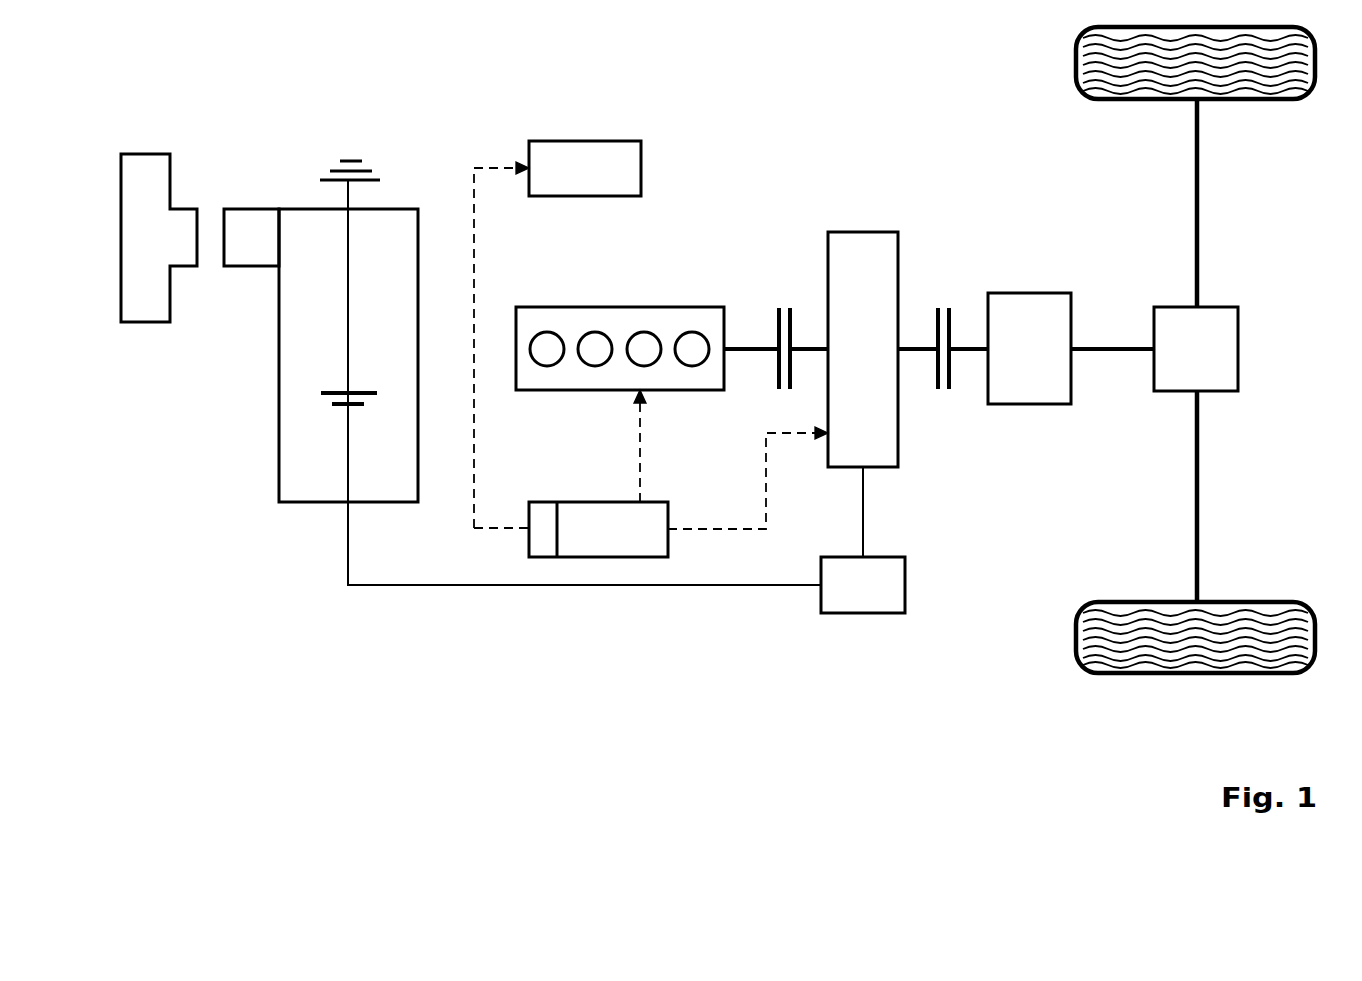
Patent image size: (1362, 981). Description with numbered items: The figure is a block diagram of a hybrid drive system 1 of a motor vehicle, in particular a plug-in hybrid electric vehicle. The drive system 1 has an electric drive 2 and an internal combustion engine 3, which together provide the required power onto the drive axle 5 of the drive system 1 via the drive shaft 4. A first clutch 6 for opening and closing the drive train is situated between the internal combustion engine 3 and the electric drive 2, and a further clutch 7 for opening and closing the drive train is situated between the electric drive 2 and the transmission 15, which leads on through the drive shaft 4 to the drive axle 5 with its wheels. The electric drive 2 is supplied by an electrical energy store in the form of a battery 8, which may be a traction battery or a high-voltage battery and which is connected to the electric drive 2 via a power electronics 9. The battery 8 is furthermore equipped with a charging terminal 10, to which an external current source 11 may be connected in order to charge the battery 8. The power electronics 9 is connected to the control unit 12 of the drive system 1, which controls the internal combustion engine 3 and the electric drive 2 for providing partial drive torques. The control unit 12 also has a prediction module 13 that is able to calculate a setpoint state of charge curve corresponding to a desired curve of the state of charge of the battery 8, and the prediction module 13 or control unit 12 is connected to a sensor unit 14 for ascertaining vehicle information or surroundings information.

The hybrid drive system 1 is at (498, 609).
The electric drive 2 is at (864, 232).
The internal combustion engine 3 is at (657, 307).
The drive shaft 4 is at (1113, 347).
The drive axle 5 is at (1199, 198).
The first clutch 6 is at (786, 305).
The clutch 7 is at (944, 305).
The battery 8 is at (309, 502).
The power electronics 9 is at (905, 585).
The charging terminal 10 is at (246, 209).
The external current source 11 is at (133, 154).
The control unit 12 is at (616, 507).
The prediction module 13 is at (541, 507).
The sensor unit 14 is at (584, 141).
The transmission 15 is at (1030, 293).